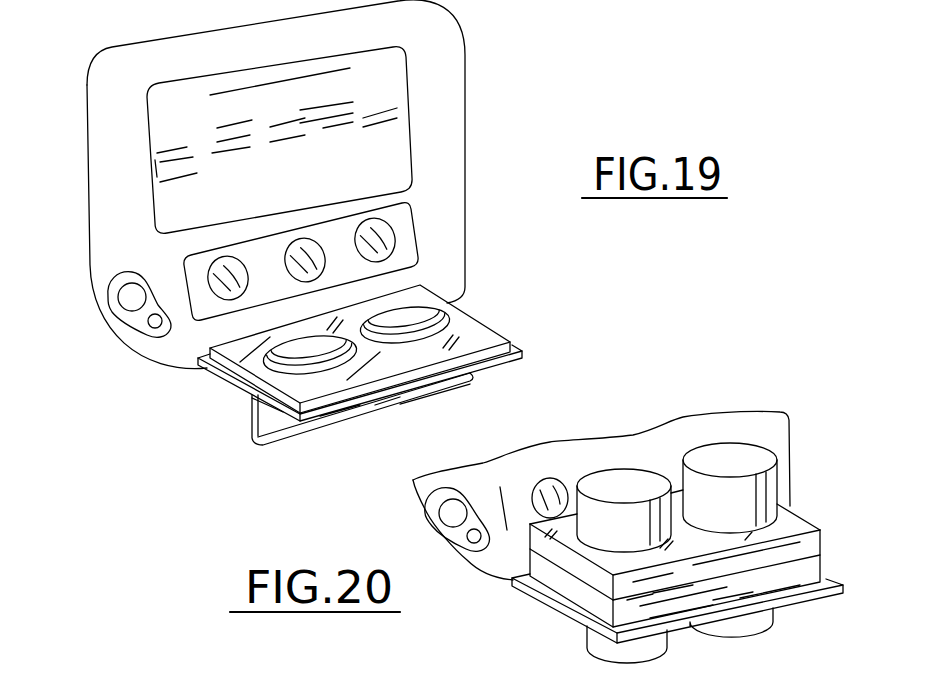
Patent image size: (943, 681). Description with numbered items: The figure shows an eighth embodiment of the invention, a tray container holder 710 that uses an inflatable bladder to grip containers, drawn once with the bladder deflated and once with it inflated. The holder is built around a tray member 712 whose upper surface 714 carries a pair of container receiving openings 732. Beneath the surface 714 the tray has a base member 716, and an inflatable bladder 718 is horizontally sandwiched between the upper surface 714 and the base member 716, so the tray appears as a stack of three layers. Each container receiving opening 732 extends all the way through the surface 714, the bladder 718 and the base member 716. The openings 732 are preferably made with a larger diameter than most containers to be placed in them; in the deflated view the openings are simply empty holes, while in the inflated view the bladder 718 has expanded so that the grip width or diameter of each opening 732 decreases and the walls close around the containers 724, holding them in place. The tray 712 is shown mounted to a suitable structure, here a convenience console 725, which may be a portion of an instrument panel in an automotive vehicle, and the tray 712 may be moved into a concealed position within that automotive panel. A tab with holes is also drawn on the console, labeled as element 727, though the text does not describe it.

In FIG. 19, the tray container holder 710 is at (491, 255).
In FIG. 20, the tray container holder 710 is at (798, 470).
In FIG. 19, the tray member 712 is at (387, 396).
In FIG. 19, the surface 714 is at (483, 333).
In FIG. 20, the surface 714 is at (789, 513).
In FIG. 19, the base member 716 is at (247, 388).
In FIG. 20, the base member 716 is at (603, 630).
In FIG. 19, the inflatable bladder 718 is at (257, 441).
In FIG. 20, the inflatable bladder 718 is at (575, 595).
In FIG. 20, the containers 724 is at (617, 468).
In FIG. 19, the convenience console 725 is at (445, 67).
In FIG. 19, the mounting tab 727 is at (116, 311).
In FIG. 20, the mounting tab 727 is at (432, 522).
In FIG. 19, the container receiving openings 732 is at (427, 333).